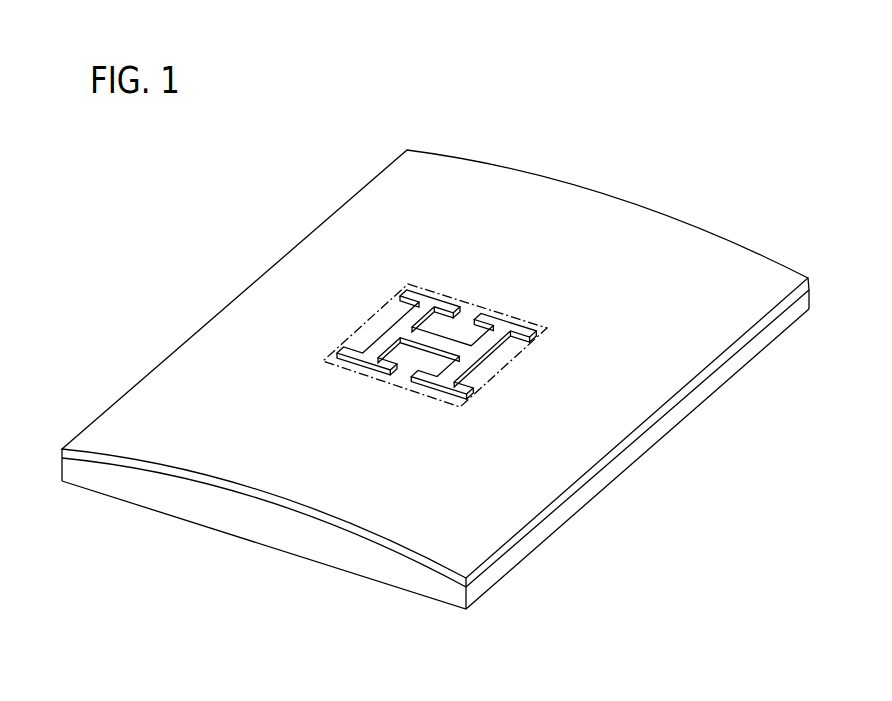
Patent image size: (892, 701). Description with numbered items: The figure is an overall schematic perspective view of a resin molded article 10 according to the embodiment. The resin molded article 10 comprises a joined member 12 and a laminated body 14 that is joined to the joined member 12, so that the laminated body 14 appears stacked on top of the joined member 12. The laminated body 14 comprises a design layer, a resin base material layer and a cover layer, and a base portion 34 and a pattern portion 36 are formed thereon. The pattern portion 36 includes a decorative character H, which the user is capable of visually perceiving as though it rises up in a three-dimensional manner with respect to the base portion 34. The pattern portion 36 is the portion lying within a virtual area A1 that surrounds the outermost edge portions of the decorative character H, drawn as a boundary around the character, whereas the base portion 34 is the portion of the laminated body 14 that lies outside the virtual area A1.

The resin molded article 10 is at (705, 115).
The joined member 12 is at (624, 474).
The laminated body 14 is at (575, 202).
The base portion 34 is at (312, 283).
The pattern portion 36 is at (427, 305).
The virtual area A1 is at (408, 284).